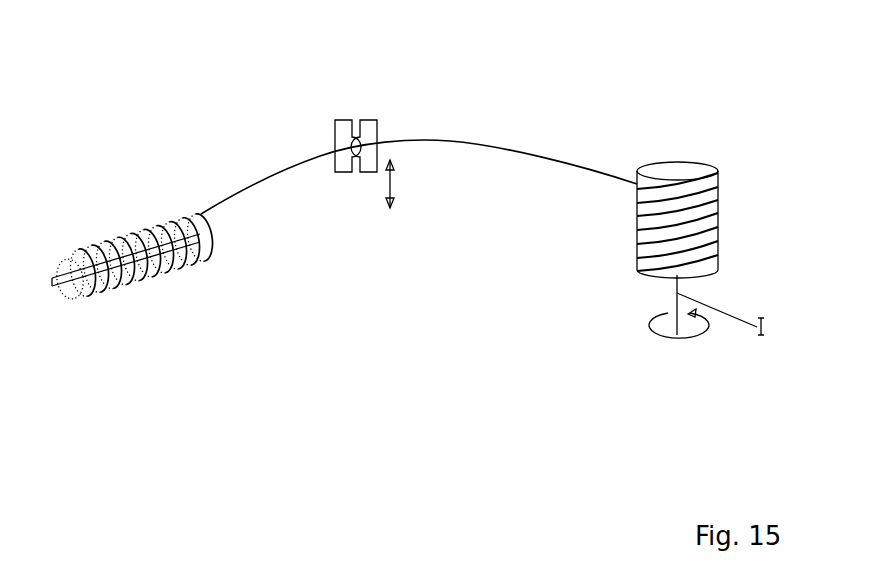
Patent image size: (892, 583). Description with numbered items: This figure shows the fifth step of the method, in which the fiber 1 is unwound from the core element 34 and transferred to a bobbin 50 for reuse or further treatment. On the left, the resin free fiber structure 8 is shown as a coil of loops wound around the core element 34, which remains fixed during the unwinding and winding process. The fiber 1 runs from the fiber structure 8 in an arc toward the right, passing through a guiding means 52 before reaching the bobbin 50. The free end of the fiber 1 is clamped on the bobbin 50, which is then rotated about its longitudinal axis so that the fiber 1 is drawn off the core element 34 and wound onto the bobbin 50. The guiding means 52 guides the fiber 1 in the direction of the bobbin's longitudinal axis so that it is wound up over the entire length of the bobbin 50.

The fiber 1 is at (285, 168).
The fiber structure 8 is at (146, 284).
The core element 34 is at (77, 298).
The bobbin 50 is at (710, 183).
The guiding means 52 is at (370, 130).